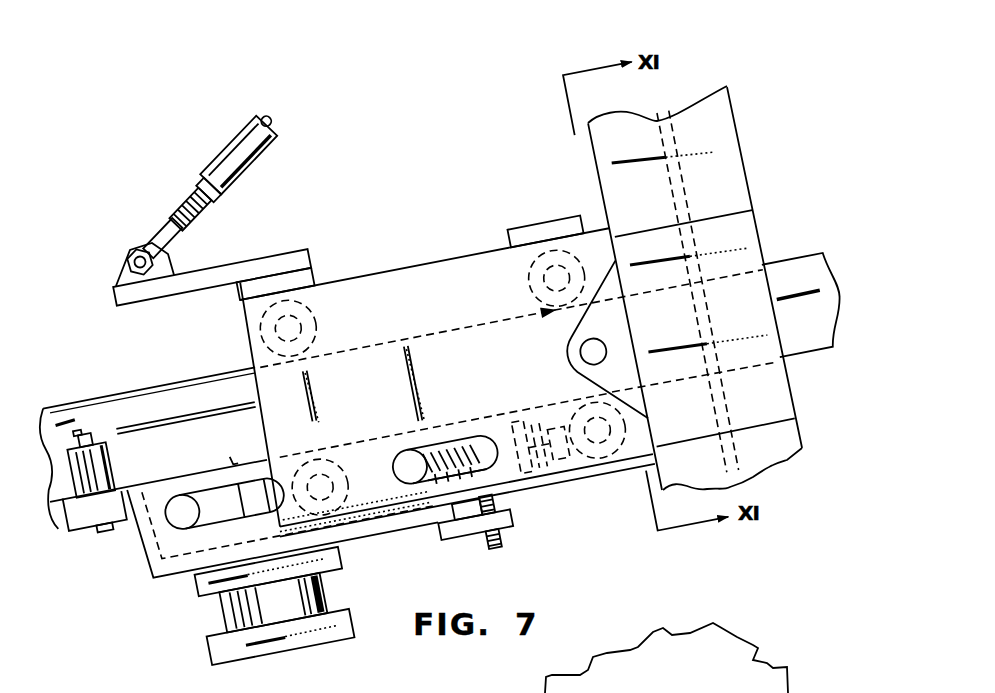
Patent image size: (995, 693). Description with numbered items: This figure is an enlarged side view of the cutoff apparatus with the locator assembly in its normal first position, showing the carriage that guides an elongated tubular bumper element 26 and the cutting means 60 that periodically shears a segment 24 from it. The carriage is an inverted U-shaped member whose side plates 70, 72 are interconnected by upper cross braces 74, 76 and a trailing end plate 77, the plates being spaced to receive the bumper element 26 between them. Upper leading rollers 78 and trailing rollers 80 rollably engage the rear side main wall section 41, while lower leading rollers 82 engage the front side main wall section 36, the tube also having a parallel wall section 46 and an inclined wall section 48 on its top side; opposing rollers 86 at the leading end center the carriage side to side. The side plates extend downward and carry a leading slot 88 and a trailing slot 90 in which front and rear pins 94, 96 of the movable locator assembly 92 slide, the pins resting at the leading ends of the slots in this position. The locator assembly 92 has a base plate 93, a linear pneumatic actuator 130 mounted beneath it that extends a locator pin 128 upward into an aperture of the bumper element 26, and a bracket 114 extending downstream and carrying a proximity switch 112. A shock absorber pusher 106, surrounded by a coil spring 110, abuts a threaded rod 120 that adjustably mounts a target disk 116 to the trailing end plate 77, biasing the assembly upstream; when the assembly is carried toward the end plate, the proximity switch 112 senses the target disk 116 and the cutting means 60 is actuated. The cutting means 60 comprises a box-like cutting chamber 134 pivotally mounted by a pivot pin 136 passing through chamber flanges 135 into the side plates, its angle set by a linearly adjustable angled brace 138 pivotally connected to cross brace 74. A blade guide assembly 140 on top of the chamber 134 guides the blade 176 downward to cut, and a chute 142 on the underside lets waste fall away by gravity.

The cutting means 60 is at (762, 66).
The blade 176 is at (670, 140).
The cutting chamber 134 is at (742, 128).
The blade guide assembly 140 is at (746, 165).
The chute 142 is at (800, 435).
The segment 24 is at (836, 253).
The angled brace 138 is at (226, 148).
The upper cross brace 74 is at (316, 273).
The side plate 72 is at (373, 300).
The side plate 70 is at (427, 300).
The upper cross brace 76 is at (529, 230).
The trailing rollers 80 is at (535, 296).
The upper leading rollers 78 is at (325, 336).
The lower leading rollers 82 is at (341, 498).
The trailing end plate 77 is at (570, 406).
The pivot pin 136 is at (591, 350).
The chamber flanges 135 is at (590, 327).
The bumper element 26 is at (143, 388).
The main wall section 41 is at (206, 376).
The inclined wall section 48 is at (172, 420).
The parallel wall section 46 is at (201, 457).
The opposing rollers 86 is at (113, 458).
The front pins 94 is at (173, 505).
The leading slot 88 is at (214, 520).
The locator pin 128 is at (235, 459).
The main wall section 36 is at (49, 510).
The locator assembly 92 is at (155, 586).
The linear pneumatic actuator 130 is at (304, 642).
The base plate 93 is at (382, 540).
The bracket 114 is at (512, 526).
The proximity switch 112 is at (488, 548).
The rear pins 96 is at (403, 456).
The coil spring 110 is at (478, 450).
The trailing slot 90 is at (449, 425).
The target disk 116 is at (545, 424).
The threaded rod 120 is at (560, 478).
The pusher 106 is at (534, 482).